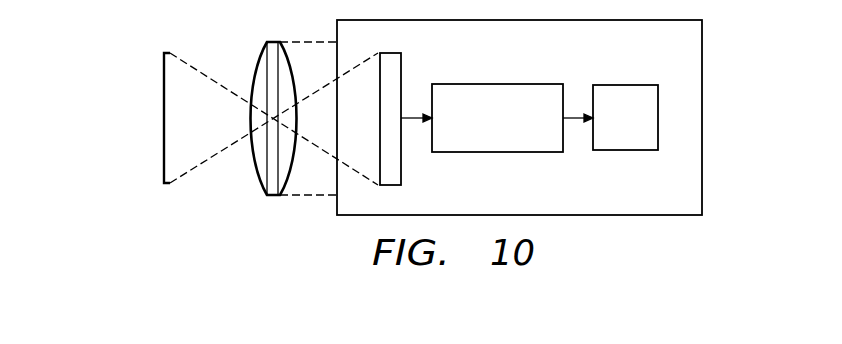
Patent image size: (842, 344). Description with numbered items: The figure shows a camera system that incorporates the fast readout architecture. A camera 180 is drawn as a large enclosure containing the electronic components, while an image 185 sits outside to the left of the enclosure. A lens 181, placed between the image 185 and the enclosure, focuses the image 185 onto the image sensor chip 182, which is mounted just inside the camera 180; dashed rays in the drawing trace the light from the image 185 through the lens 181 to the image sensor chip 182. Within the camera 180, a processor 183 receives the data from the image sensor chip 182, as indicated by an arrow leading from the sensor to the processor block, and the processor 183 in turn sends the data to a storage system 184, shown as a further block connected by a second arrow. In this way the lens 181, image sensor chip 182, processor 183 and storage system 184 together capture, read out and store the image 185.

The camera 180 is at (742, 63).
The lens 181 is at (257, 170).
The image sensor chip 182 is at (404, 68).
The processor 183 is at (497, 152).
The storage system 184 is at (625, 150).
The image 185 is at (164, 117).